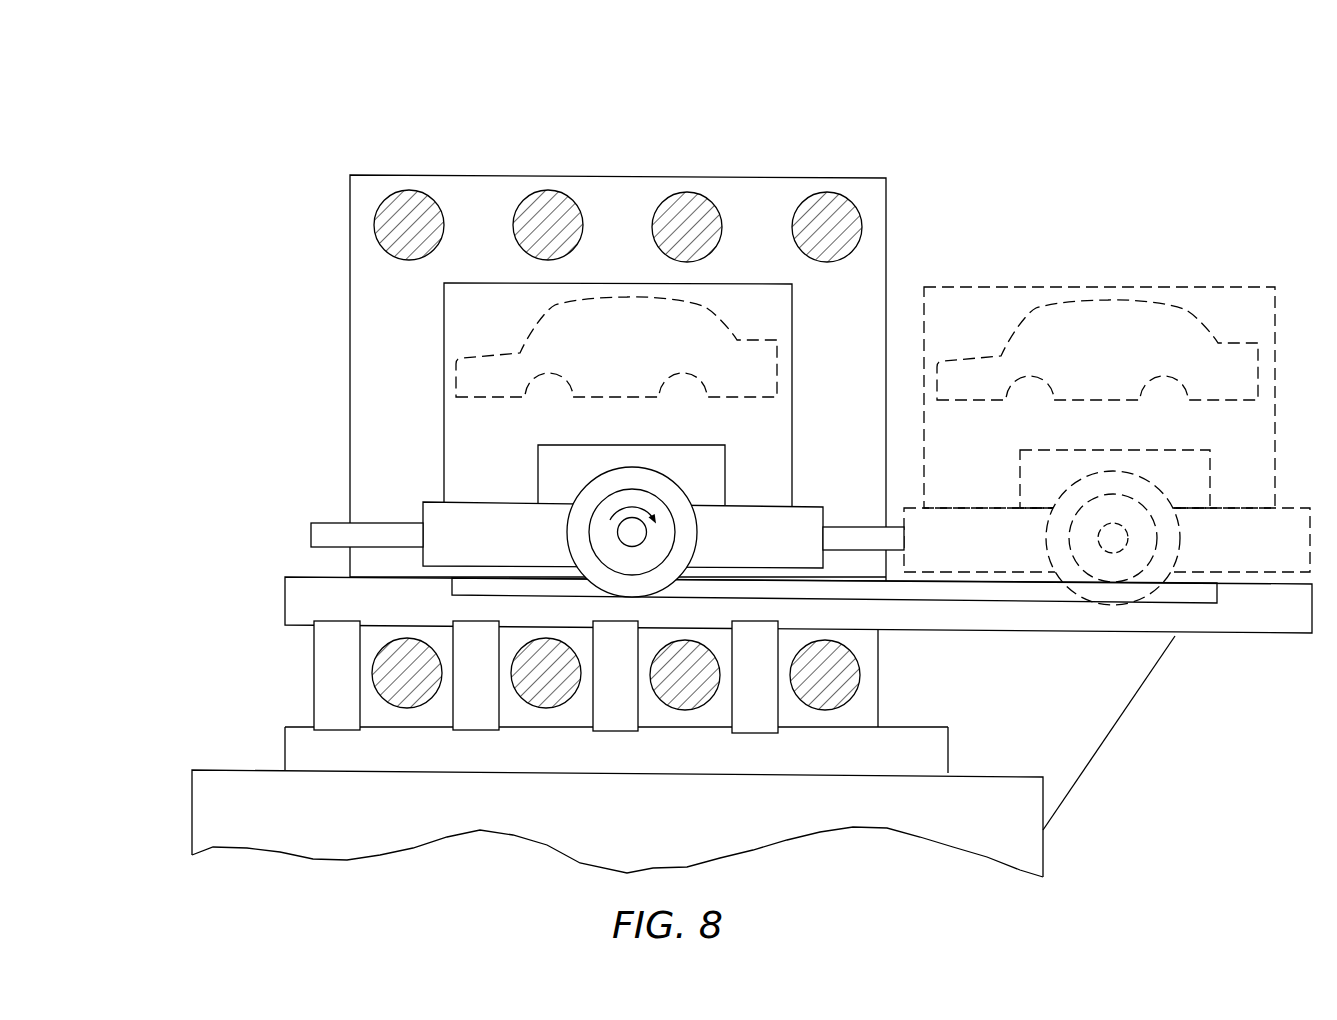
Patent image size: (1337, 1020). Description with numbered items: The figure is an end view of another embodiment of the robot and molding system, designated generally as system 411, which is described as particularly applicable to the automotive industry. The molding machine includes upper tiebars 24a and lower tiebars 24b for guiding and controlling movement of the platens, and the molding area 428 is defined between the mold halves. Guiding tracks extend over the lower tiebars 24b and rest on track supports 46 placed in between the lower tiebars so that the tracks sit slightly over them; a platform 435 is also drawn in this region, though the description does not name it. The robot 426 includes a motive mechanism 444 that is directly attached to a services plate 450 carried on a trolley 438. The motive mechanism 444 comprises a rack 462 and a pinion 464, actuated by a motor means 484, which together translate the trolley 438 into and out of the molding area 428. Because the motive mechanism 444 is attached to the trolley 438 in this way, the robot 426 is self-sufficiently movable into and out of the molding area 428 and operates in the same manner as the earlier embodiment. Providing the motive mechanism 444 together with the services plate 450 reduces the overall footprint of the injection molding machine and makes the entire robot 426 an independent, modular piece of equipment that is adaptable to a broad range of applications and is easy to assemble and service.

The system 411 is at (453, 120).
The upper tiebars 24a is at (537, 203).
The molding area 428 is at (760, 242).
The robot 426 is at (417, 325).
The services plate 450 is at (783, 309).
The motor means 484 is at (545, 463).
The motive mechanism 444 is at (717, 529).
The pinion 464 is at (590, 537).
The trolley 438 is at (488, 557).
The rack 462 is at (743, 593).
The platform 435 is at (323, 602).
The track supports 46 is at (330, 683).
The lower tiebars 24b is at (850, 673).